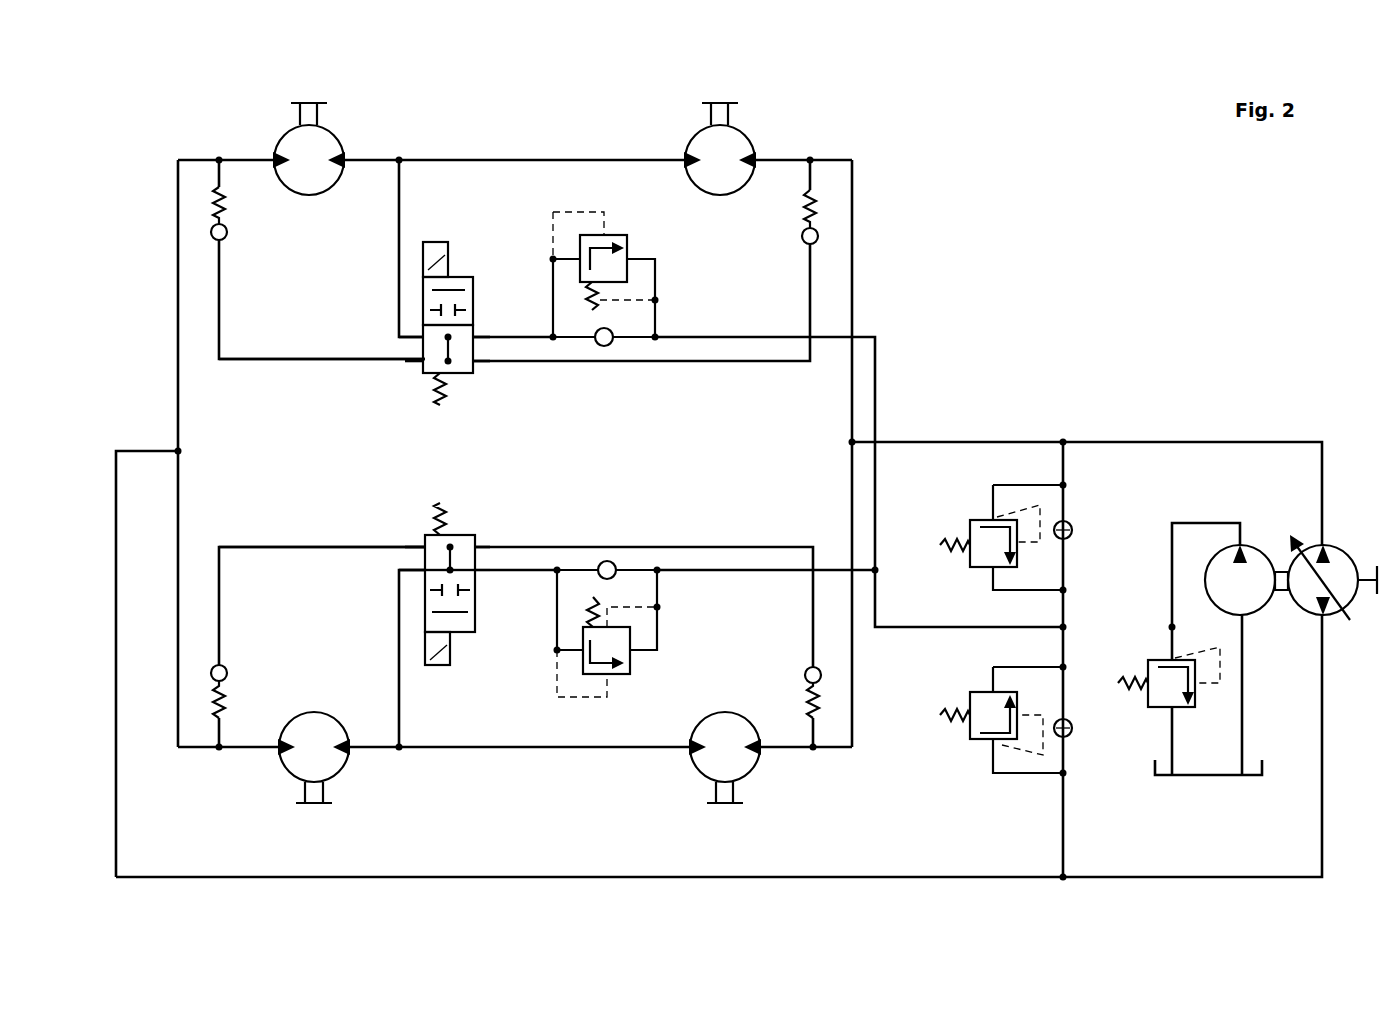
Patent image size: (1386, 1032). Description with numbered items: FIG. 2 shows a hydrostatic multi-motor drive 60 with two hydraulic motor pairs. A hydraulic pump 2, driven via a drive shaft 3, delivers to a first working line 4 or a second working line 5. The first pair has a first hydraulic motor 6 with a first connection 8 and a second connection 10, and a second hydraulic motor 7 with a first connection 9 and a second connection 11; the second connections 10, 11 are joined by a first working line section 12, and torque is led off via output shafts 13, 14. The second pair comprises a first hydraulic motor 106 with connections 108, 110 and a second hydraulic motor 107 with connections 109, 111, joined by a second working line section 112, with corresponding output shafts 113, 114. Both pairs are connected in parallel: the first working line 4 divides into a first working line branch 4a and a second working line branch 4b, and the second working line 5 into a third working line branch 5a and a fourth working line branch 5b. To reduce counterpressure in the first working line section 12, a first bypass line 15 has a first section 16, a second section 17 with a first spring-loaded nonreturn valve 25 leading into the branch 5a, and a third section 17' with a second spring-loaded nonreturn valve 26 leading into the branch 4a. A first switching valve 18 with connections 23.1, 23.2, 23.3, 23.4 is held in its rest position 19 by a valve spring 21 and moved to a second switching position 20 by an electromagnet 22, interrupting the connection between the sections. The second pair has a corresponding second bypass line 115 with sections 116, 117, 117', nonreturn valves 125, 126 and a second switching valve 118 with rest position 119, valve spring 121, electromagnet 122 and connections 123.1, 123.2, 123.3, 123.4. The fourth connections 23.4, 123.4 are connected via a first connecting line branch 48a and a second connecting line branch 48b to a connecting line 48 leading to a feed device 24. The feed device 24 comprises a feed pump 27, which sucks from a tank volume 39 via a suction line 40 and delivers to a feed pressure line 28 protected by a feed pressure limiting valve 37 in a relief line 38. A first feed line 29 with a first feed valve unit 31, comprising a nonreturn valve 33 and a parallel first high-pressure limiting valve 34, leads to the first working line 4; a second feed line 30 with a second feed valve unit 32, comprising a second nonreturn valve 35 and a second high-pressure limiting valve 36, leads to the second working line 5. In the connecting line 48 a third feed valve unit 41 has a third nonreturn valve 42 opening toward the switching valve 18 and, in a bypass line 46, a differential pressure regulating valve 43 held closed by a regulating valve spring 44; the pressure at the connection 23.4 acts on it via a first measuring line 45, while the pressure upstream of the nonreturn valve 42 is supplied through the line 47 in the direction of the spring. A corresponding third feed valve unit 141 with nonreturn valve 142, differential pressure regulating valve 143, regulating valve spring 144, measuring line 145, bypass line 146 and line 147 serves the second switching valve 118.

The hydraulic pump 2 is at (1338, 562).
The drive shaft 3 is at (1373, 594).
The first working line 4 is at (1008, 442).
The first working line branch 4a is at (840, 748).
The second working line branch 4b is at (840, 160).
The second working line 5 is at (887, 877).
The third working line branch 5a is at (178, 518).
The fourth working line branch 5b is at (178, 285).
The first hydraulic motor 6 is at (740, 765).
The second hydraulic motor 7 is at (330, 765).
The first connection 8 is at (757, 756).
The first connection 9 is at (280, 754).
The second connection 10 is at (692, 754).
The second connection 11 is at (350, 756).
The first working line section 12 is at (433, 750).
The output shaft 13 is at (725, 803).
The output shaft 14 is at (315, 803).
The first bypass line 15 is at (272, 535).
The first section 16 is at (398, 672).
The second section 17 is at (322, 606).
The third section 17' is at (644, 607).
The first switching valve 18 is at (435, 588).
The rest position 19 is at (455, 548).
The second switching position 20 is at (425, 608).
The valve spring 21 is at (432, 515).
The electromagnet 22 is at (445, 668).
The first connection 23.1 is at (425, 577).
The second connection 23.2 is at (425, 547).
The third connection 23.3 is at (475, 547).
The fourth connection 23.4 is at (478, 575).
The feed device 24 is at (1235, 475).
The first spring-loaded nonreturn valve 25 is at (228, 675).
The second spring-loaded nonreturn valve 26 is at (805, 678).
The feed pump 27 is at (1252, 605).
The feed pressure line 28 is at (1205, 523).
The first feed line 29 is at (1063, 465).
The second feed line 30 is at (1063, 828).
The first feed valve unit 31 is at (999, 543).
The second feed valve unit 32 is at (1017, 744).
The nonreturn valve 33 is at (1073, 528).
The first high-pressure limiting valve 34 is at (968, 530).
The second nonreturn valve 35 is at (1073, 733).
The second high-pressure limiting valve 36 is at (968, 733).
The feed pressure limiting valve 37 is at (1148, 700).
The relief line 38 is at (1175, 740).
The tank volume 39 is at (1250, 778).
The suction line 40 is at (1245, 710).
The third feed valve unit 41 is at (603, 653).
The third nonreturn valve 42 is at (607, 561).
The differential pressure regulating valve 43 is at (620, 660).
The regulating valve spring 44 is at (557, 607).
The first measuring line 45 is at (612, 694).
The bypass line 46 is at (657, 640).
The control line 47 is at (660, 607).
The connecting line 48 is at (900, 627).
The first connecting line branch 48a is at (835, 570).
The second connecting line branch 48b is at (832, 337).
The hydraulic drive system 60 is at (1198, 306).
The first hydraulic motor 106 is at (733, 145).
The second hydraulic motor 107 is at (322, 143).
The first connection 108 is at (758, 152).
The first connection 109 is at (273, 152).
The second connection 110 is at (686, 152).
The second connection 111 is at (347, 152).
The second working line section 112 is at (433, 160).
The output shaft 113 is at (722, 103).
The output shaft 114 is at (315, 103).
The second bypass line 115 is at (270, 373).
The first section 116 is at (398, 236).
The second section 117 is at (322, 299).
The third section 117' is at (641, 302).
The second switching valve 118 is at (428, 280).
The rest position 119 is at (462, 350).
The valve spring 121 is at (432, 395).
The electromagnet 122 is at (437, 245).
The first connection 123.1 is at (423, 333).
The second connection 123.2 is at (423, 362).
The third connection 123.3 is at (473, 363).
The fourth connection 123.4 is at (468, 337).
The first spring-loaded nonreturn valve 125 is at (228, 232).
The second spring-loaded nonreturn valve 126 is at (801, 236).
The third feed valve unit 141 is at (599, 257).
The third nonreturn valve 142 is at (605, 347).
The differential pressure regulating valve 143 is at (630, 251).
The regulating valve spring 144 is at (565, 300).
The first measuring line 145 is at (607, 220).
The bypass line 146 is at (657, 270).
The control line 147 is at (660, 300).